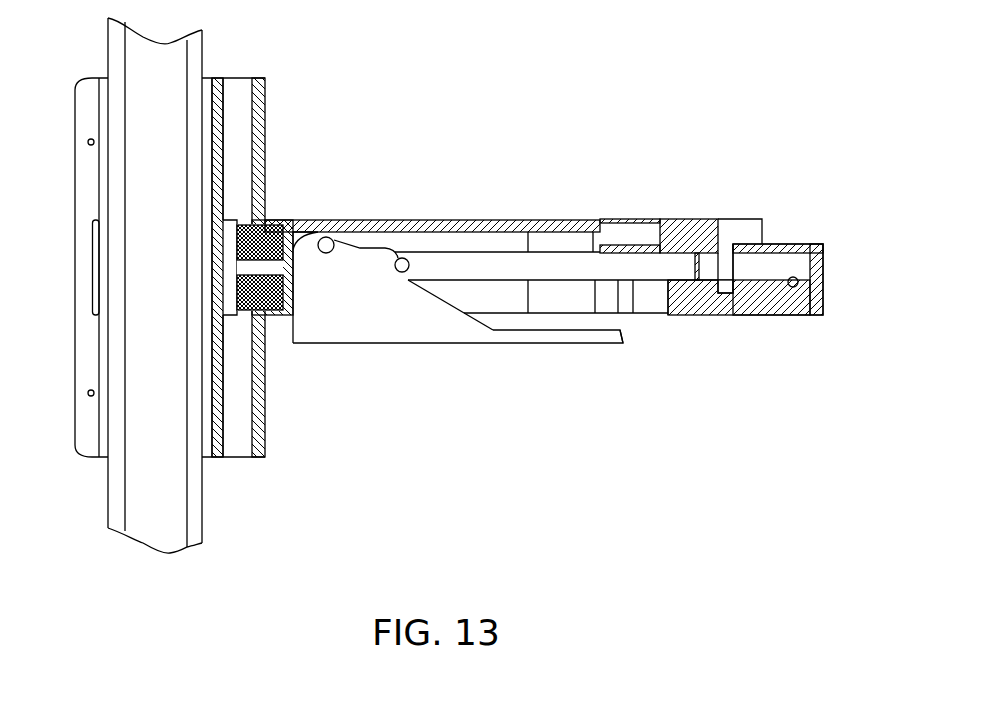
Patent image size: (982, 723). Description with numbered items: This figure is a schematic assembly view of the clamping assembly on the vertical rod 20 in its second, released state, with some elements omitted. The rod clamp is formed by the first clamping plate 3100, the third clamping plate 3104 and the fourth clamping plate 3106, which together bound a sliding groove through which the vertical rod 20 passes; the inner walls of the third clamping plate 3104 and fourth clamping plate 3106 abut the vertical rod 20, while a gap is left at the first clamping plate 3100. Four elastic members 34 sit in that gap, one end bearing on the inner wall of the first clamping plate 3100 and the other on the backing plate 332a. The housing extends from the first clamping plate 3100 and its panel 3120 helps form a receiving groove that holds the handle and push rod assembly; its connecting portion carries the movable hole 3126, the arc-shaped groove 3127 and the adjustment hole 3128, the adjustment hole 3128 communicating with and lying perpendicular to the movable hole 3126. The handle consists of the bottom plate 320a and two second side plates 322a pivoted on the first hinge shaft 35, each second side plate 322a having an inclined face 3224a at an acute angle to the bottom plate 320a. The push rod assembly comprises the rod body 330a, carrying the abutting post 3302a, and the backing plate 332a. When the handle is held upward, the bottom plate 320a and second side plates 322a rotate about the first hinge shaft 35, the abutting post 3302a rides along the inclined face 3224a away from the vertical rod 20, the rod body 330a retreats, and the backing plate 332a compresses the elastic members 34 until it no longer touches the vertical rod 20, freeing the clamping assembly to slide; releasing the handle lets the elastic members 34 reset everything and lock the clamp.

The vertical rod 20 is at (173, 508).
The fourth clamping plate 3106 is at (86, 93).
The third clamping plate 3104 is at (249, 100).
The backing plate 332a is at (215, 442).
The first clamping plate 3100 is at (256, 104).
The elastic member 34 is at (262, 245).
The panel 3120 is at (415, 228).
The second side plate 322a is at (320, 318).
The first hinge shaft 35 is at (329, 240).
The abutting post 3302a is at (407, 262).
The inclined face 3224a is at (455, 307).
The bottom plate 320a is at (545, 335).
The rod body 330a is at (630, 265).
The movable hole 3126 is at (758, 270).
The arc-shaped groove 3127 is at (726, 265).
The adjustment hole 3128 is at (793, 256).